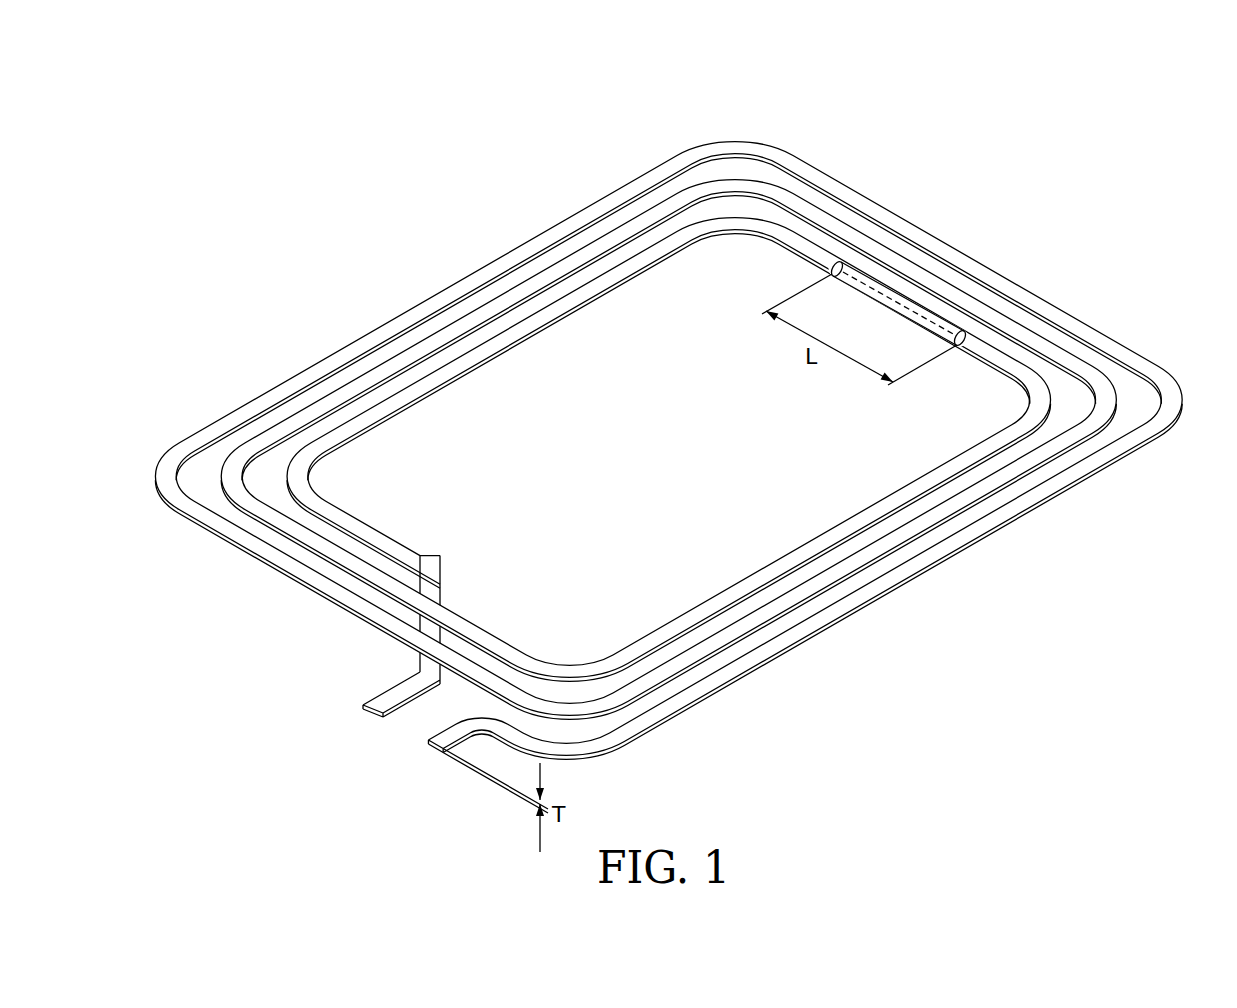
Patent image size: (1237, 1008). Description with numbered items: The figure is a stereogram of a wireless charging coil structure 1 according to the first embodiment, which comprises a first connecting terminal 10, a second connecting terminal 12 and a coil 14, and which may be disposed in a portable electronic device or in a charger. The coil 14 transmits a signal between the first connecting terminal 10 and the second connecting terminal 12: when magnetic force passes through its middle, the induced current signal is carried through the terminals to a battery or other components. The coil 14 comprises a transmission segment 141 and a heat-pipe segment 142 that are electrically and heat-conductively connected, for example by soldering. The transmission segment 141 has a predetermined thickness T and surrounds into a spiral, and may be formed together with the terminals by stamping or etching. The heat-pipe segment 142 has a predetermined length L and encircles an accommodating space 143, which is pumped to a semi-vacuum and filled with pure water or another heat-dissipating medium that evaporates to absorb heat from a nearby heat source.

The wireless charging coil structure 1 is at (294, 98).
The first connecting terminal 10 is at (366, 709).
The second connecting terminal 12 is at (430, 747).
The coil 14 is at (772, 133).
The transmission segment 141 is at (833, 190).
The heat-pipe segment 142 is at (880, 283).
The accommodating space 143 is at (901, 305).